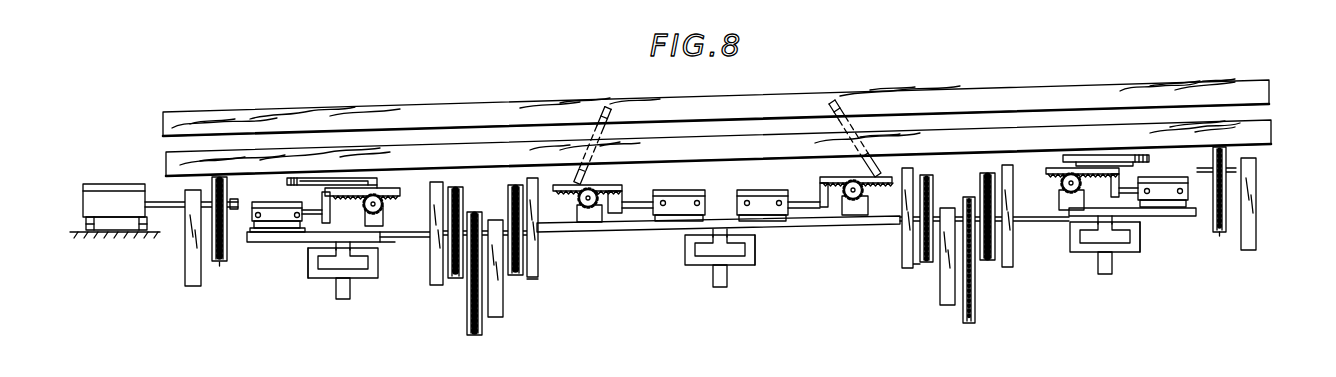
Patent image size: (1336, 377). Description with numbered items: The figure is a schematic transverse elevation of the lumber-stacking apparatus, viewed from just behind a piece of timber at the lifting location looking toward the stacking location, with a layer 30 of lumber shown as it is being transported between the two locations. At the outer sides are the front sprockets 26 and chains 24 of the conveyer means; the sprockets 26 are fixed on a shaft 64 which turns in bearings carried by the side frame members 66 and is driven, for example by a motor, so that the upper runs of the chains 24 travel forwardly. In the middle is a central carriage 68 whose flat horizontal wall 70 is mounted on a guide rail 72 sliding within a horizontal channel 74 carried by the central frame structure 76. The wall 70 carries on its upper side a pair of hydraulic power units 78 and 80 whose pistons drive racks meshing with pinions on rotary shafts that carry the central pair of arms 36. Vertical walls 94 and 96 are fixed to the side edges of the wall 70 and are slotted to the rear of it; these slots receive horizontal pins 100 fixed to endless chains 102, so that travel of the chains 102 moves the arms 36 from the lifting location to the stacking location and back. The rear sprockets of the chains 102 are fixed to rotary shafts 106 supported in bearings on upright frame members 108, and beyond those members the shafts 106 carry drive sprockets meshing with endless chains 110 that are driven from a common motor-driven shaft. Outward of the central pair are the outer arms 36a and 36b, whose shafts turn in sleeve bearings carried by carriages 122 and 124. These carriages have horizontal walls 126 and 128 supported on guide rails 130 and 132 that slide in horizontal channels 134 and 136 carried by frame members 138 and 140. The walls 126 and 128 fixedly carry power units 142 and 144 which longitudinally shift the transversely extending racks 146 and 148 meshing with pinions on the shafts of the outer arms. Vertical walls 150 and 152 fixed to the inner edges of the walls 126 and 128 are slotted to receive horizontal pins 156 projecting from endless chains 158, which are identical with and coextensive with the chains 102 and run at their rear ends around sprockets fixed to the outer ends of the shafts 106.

The chains 24 is at (223, 252).
The front sprockets 26 is at (225, 222).
The layer of lumber 30 is at (916, 88).
The arms 36 is at (602, 108).
The outer arm 36a is at (327, 168).
The outer arm 36b is at (1108, 144).
The shaft 64 is at (170, 202).
The side frame members 66 is at (185, 258).
The central carriage 68 is at (823, 226).
The horizontal wall 70 is at (588, 232).
The guide rail 72 is at (702, 262).
The horizontal channel 74 is at (750, 262).
The central frame structure 76 is at (720, 288).
The power unit 78 is at (698, 182).
The power unit 80 is at (755, 194).
The vertical wall 94 is at (538, 255).
The vertical wall 96 is at (902, 241).
The horizontal pins 100 is at (540, 272).
The endless chains 102 is at (515, 273).
The rotary shafts 106 is at (480, 210).
The upright frame members 108 is at (497, 317).
The endless chains 110 is at (472, 300).
The carriage 122 is at (395, 250).
The carriage 124 is at (1062, 224).
The horizontal wall 126 is at (272, 242).
The horizontal wall 128 is at (1150, 216).
The guide rail 130 is at (368, 269).
The guide rail 132 is at (1125, 240).
The horizontal channel 134 is at (312, 280).
The horizontal channel 136 is at (1140, 246).
The frame member 138 is at (344, 300).
The frame member 140 is at (1105, 275).
The power unit 142 is at (286, 206).
The power unit 144 is at (1155, 178).
The rack 146 is at (390, 186).
The rack 148 is at (1060, 182).
The vertical wall 150 is at (431, 212).
The vertical wall 152 is at (1011, 232).
The horizontal pins 156 is at (447, 200).
The endless chains 158 is at (458, 280).